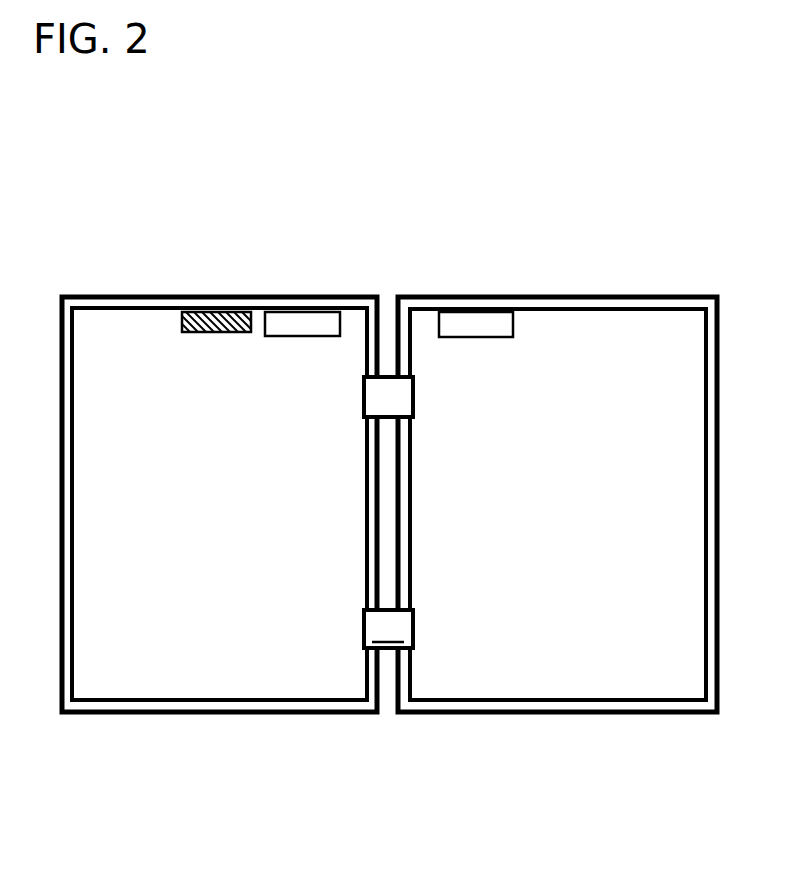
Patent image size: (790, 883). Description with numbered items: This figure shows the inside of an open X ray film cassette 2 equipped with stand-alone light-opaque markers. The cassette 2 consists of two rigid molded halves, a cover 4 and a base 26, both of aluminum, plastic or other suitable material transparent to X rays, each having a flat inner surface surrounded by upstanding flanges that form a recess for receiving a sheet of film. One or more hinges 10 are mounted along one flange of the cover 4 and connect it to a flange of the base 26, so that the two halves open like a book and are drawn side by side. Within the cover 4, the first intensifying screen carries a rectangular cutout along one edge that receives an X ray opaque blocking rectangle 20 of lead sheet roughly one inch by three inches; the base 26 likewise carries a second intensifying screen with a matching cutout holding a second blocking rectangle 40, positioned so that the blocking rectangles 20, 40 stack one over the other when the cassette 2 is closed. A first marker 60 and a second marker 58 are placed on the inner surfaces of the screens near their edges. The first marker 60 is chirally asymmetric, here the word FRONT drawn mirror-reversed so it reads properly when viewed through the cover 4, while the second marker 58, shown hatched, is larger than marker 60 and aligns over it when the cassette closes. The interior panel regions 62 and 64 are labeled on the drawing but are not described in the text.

The X ray film cassette 2 is at (354, 832).
The cover 4 is at (582, 712).
The hinges 10 is at (404, 410).
The blocking rectangle 20 is at (463, 322).
The base 26 is at (232, 712).
The second blocking rectangle 40 is at (307, 322).
The second marker 58 is at (210, 311).
The first marker 60 is at (565, 312).
The left panel interior 62 is at (233, 598).
The right panel interior 64 is at (590, 598).